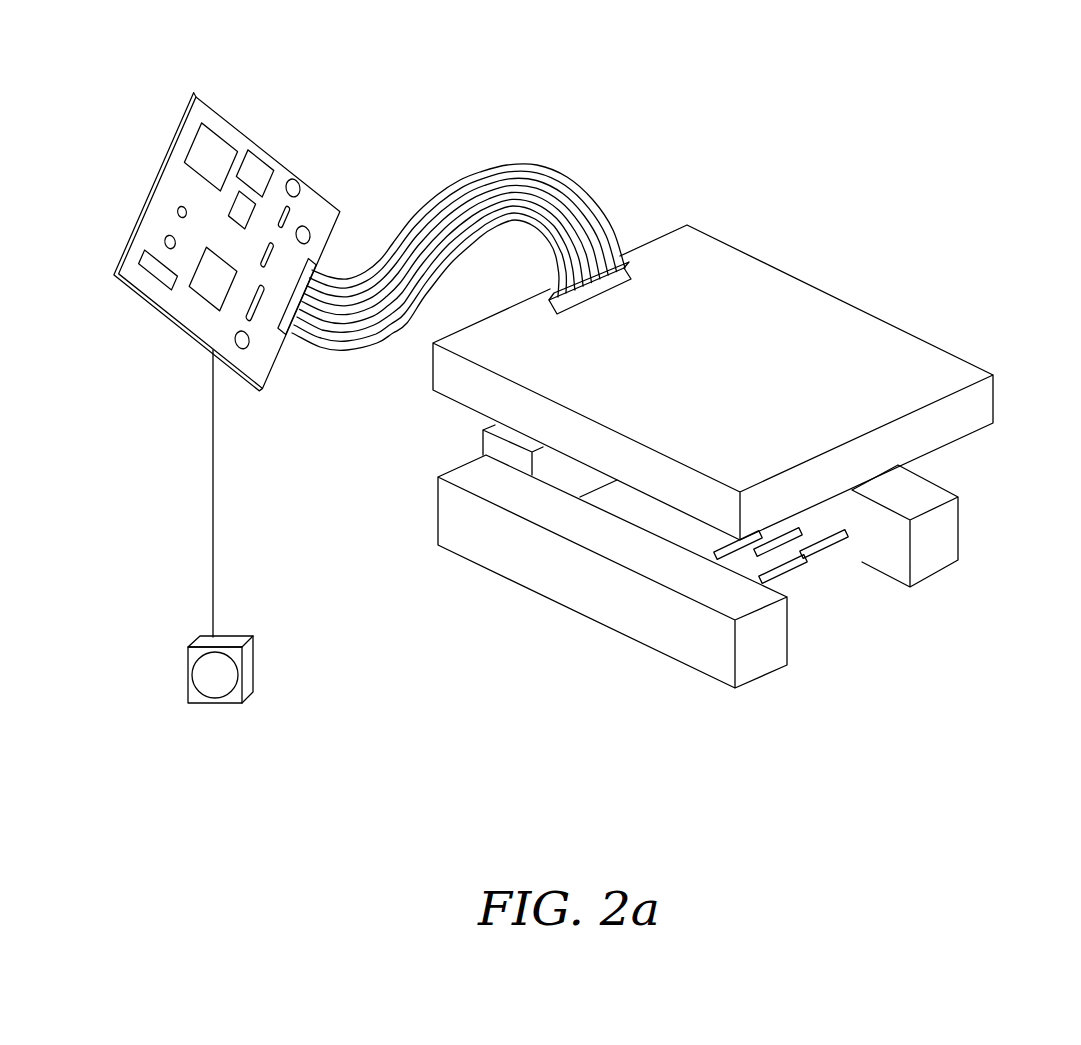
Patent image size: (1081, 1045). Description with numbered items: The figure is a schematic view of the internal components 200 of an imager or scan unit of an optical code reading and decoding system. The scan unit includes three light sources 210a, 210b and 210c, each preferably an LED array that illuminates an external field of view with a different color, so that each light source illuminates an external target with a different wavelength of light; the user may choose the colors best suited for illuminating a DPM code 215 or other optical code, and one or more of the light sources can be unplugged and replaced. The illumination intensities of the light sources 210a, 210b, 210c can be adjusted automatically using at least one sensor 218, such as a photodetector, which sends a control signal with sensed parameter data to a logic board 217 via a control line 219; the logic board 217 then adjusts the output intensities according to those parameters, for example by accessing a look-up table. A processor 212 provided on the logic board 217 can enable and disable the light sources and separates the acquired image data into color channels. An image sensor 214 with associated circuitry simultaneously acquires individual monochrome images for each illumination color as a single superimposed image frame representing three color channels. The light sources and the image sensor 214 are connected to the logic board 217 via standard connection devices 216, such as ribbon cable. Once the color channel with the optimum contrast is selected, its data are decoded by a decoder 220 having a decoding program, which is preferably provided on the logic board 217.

The internal components 200 is at (670, 807).
The light source 210a is at (575, 574).
The light source 210b is at (483, 437).
The light source 210c is at (946, 482).
The processor 212 is at (210, 104).
The image sensor 214 is at (838, 336).
The DPM code 215 is at (793, 573).
The connection devices 216 is at (469, 198).
The logic board 217 is at (254, 138).
The sensor 218 is at (230, 705).
The control line 219 is at (215, 555).
The decoder 220 is at (210, 247).